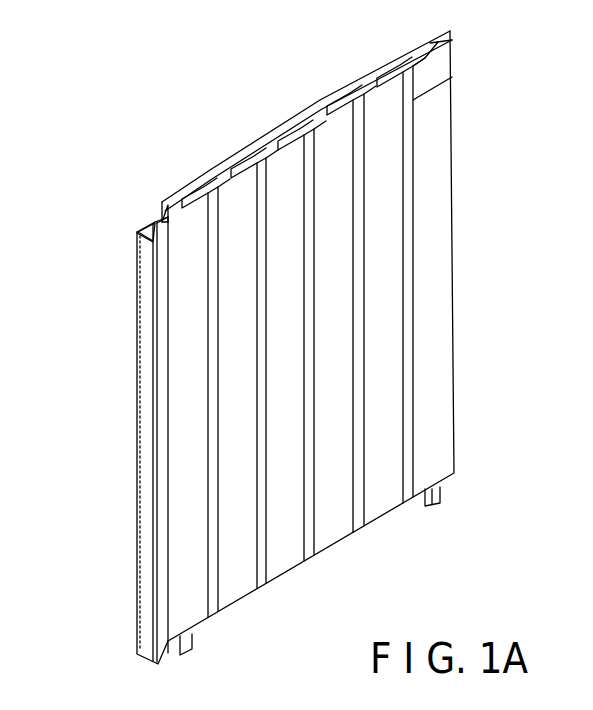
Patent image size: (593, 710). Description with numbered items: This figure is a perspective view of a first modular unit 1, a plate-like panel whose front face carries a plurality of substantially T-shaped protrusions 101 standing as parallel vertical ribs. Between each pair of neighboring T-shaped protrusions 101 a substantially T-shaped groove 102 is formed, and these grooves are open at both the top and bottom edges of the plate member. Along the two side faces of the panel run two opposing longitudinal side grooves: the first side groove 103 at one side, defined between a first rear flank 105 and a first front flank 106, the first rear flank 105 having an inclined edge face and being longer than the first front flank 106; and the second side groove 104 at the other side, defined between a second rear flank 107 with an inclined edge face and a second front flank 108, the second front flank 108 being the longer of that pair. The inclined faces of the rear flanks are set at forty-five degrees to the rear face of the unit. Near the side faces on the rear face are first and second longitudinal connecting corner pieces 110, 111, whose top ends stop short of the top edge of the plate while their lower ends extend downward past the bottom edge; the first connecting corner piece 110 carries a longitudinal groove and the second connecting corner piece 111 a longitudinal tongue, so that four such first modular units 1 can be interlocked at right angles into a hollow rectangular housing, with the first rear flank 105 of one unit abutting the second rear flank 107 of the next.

The first modular unit 1 is at (132, 433).
The T-shaped protrusion 101 is at (388, 372).
The T-shaped groove 102 is at (360, 296).
The first side groove 103 is at (450, 39).
The second side groove 104 is at (147, 220).
The first rear flank 105 is at (444, 32).
The first front flank 106 is at (443, 57).
The second rear flank 107 is at (160, 212).
The second front flank 108 is at (137, 230).
The first connecting corner piece 110 is at (192, 644).
The second connecting corner piece 111 is at (435, 500).